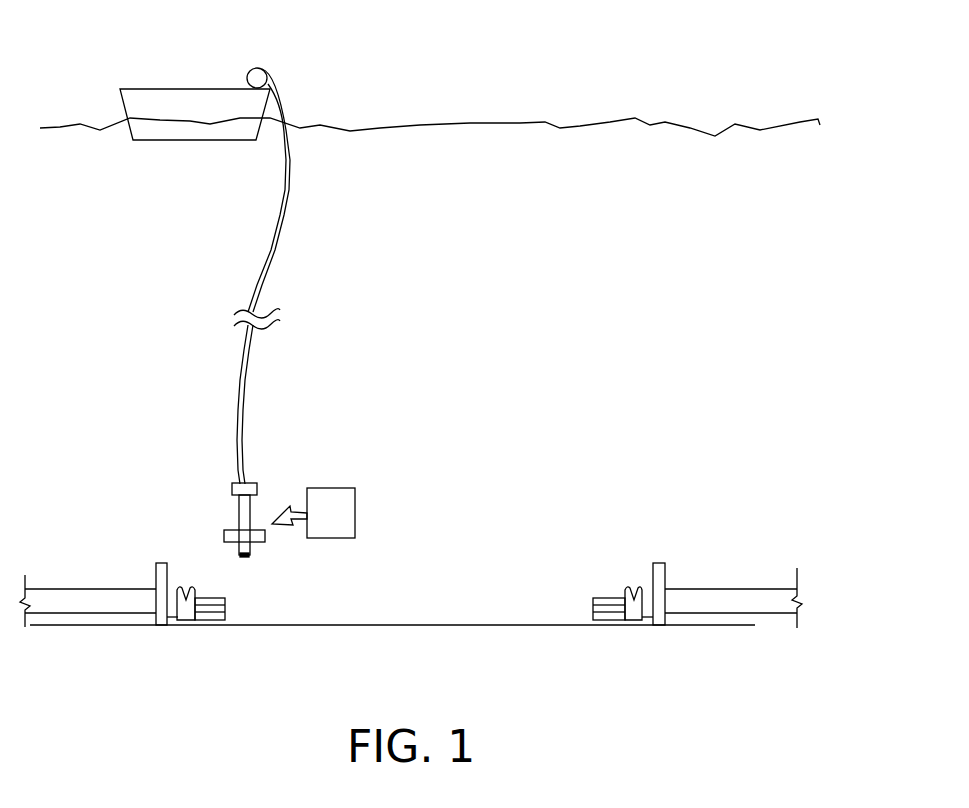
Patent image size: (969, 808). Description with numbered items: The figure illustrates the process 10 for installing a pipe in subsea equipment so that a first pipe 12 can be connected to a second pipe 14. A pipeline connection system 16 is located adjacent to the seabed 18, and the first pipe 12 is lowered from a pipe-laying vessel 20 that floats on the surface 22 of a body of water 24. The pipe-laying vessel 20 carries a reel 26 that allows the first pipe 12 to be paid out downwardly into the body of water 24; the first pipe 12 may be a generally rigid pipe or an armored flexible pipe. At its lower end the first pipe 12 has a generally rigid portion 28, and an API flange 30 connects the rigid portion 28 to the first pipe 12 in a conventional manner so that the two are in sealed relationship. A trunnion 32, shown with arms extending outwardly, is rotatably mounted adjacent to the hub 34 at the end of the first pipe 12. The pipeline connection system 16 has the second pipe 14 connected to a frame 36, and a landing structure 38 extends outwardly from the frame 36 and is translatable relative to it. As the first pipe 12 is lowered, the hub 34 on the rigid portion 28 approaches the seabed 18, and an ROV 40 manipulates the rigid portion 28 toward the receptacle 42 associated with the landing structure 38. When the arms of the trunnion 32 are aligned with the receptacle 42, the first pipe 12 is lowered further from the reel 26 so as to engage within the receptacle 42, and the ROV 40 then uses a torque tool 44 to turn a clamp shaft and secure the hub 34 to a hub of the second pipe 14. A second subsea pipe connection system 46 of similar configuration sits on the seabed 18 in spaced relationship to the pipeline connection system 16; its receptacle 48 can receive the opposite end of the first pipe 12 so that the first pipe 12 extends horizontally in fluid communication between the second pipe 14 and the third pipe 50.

The process 10 is at (533, 55).
The first pipe 12 is at (275, 258).
The second pipe 14 is at (49, 593).
The pipeline connection system 16 is at (122, 574).
The seabed 18 is at (450, 624).
The pipe-laying vessel 20 is at (148, 89).
The surface 22 is at (393, 128).
The body of water 24 is at (580, 301).
The reel 26 is at (254, 68).
The rigid portion 28 is at (239, 517).
The API flange 30 is at (258, 483).
The trunnion 32 is at (262, 543).
The hub 34 is at (245, 557).
The frame 36 is at (167, 577).
The landing structure 38 is at (225, 608).
The ROV 40 is at (337, 488).
The receptacle 42 is at (195, 588).
The torque tool 44 is at (284, 508).
The subsea pipe connection system 46 is at (685, 584).
The receptacle 48 is at (630, 595).
The third pipe 50 is at (760, 592).